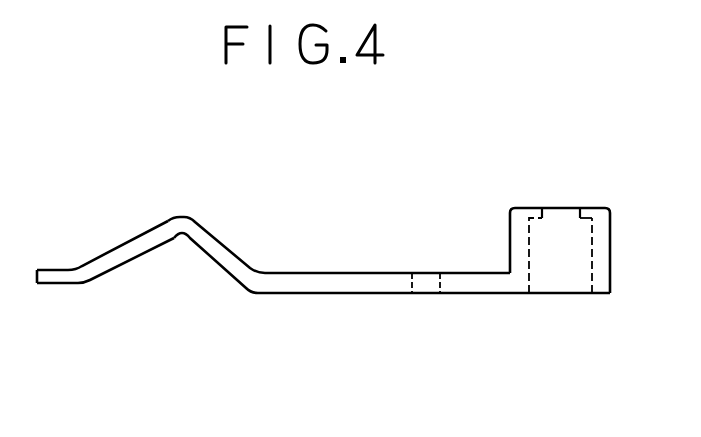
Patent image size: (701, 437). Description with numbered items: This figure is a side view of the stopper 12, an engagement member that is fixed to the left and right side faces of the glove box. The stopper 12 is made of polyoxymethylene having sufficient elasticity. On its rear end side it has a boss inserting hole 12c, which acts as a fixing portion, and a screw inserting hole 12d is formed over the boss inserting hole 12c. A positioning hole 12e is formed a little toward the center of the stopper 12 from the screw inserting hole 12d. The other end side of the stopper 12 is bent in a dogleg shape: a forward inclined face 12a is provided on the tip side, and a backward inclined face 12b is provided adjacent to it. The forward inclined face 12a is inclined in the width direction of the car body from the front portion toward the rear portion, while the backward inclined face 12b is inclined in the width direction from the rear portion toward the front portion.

The stopper 12 is at (434, 231).
The forward inclined face 12a is at (130, 252).
The backward inclined face 12b is at (230, 257).
The boss inserting hole 12c is at (590, 255).
The screw inserting hole 12d is at (573, 212).
The positioning hole 12e is at (415, 275).